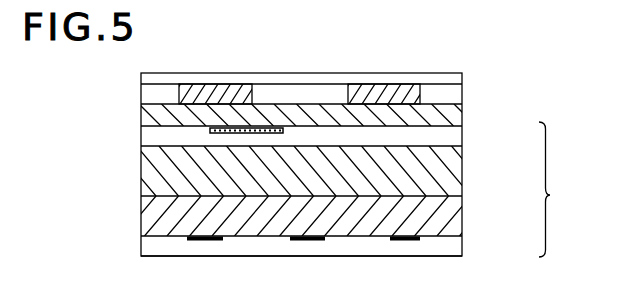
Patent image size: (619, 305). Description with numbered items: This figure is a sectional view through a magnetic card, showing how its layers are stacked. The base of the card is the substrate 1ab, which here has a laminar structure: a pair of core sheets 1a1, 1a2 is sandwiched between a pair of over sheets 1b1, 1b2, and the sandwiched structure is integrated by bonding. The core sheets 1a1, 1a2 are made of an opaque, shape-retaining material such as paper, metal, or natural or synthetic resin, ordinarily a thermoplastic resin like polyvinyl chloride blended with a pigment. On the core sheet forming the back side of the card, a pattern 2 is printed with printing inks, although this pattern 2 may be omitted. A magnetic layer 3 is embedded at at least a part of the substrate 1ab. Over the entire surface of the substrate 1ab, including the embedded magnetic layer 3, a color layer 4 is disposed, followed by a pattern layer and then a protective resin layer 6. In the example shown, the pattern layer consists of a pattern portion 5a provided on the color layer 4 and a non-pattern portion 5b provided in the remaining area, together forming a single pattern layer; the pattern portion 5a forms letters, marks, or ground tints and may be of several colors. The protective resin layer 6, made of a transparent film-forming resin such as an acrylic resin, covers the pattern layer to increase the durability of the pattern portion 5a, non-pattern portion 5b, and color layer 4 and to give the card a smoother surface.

The substrate 1ab is at (568, 189).
The core sheet 1a1 is at (462, 179).
The core sheet 1a2 is at (462, 217).
The over sheet 1b1 is at (462, 138).
The over sheet 1b2 is at (462, 245).
The pattern 2 is at (209, 240).
The magnetic layer 3 is at (280, 126).
The color layer 4 is at (264, 108).
The pattern portion 5a is at (217, 92).
The non-pattern portion 5b is at (323, 97).
The protective resin layer 6 is at (428, 80).